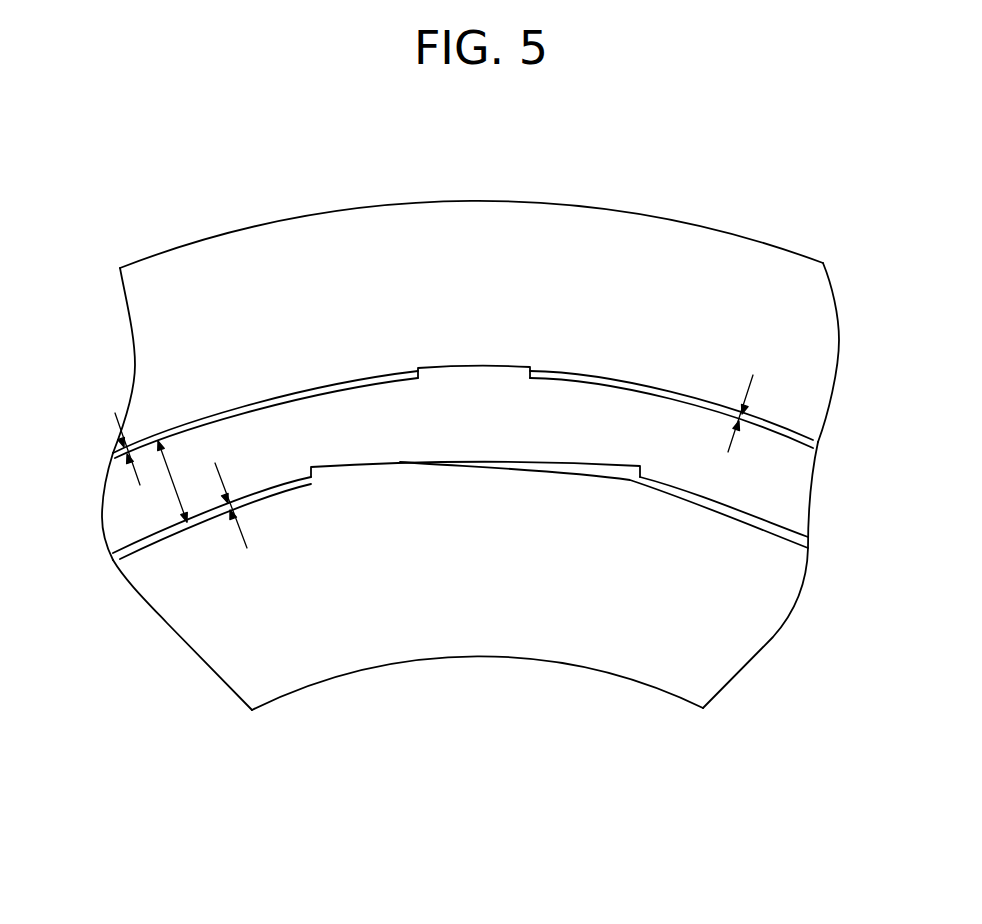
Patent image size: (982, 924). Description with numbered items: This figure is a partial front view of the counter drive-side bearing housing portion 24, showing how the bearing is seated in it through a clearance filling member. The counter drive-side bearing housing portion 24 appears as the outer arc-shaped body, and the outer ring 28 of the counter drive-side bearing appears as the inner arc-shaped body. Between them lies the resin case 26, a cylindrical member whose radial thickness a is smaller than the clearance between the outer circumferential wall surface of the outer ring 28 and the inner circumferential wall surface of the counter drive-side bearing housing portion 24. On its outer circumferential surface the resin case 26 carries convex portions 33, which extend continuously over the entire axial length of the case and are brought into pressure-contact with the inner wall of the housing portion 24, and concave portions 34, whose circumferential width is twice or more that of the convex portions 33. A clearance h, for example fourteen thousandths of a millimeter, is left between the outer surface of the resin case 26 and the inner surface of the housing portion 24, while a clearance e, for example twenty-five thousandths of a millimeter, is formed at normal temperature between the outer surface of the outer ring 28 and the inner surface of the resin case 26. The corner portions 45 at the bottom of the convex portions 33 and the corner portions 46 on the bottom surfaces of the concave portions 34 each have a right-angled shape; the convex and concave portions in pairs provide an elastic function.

The counter drive-side bearing housing portion 24 is at (433, 238).
The resin case 26 is at (122, 498).
The outer ring 28 is at (686, 660).
The convex portions 33 is at (475, 368).
The concave portions 34 is at (602, 466).
The corner portions 45 is at (418, 367).
The corner portions 46 is at (313, 473).
The clearance h is at (136, 440).
The thickness a is at (169, 470).
The clearance e is at (222, 512).